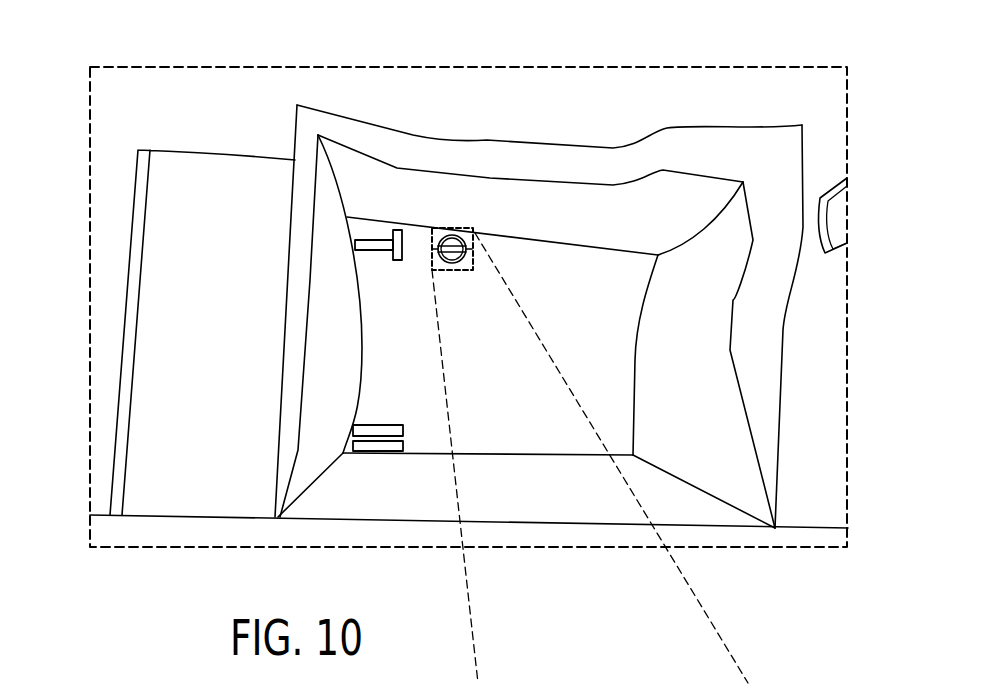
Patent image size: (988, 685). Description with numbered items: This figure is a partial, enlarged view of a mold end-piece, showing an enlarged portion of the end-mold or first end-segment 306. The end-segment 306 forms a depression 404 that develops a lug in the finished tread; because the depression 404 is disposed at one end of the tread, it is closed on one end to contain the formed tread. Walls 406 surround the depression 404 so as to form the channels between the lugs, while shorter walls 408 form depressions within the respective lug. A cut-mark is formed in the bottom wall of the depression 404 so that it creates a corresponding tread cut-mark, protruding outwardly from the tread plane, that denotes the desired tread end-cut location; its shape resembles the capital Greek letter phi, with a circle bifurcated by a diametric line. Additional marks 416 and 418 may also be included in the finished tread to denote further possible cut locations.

The end-segment 306 is at (163, 265).
The depression 404 is at (500, 425).
The walls 406 is at (767, 310).
The shorter walls 408 is at (462, 228).
The additional mark 416 is at (380, 237).
The additional mark 418 is at (378, 430).